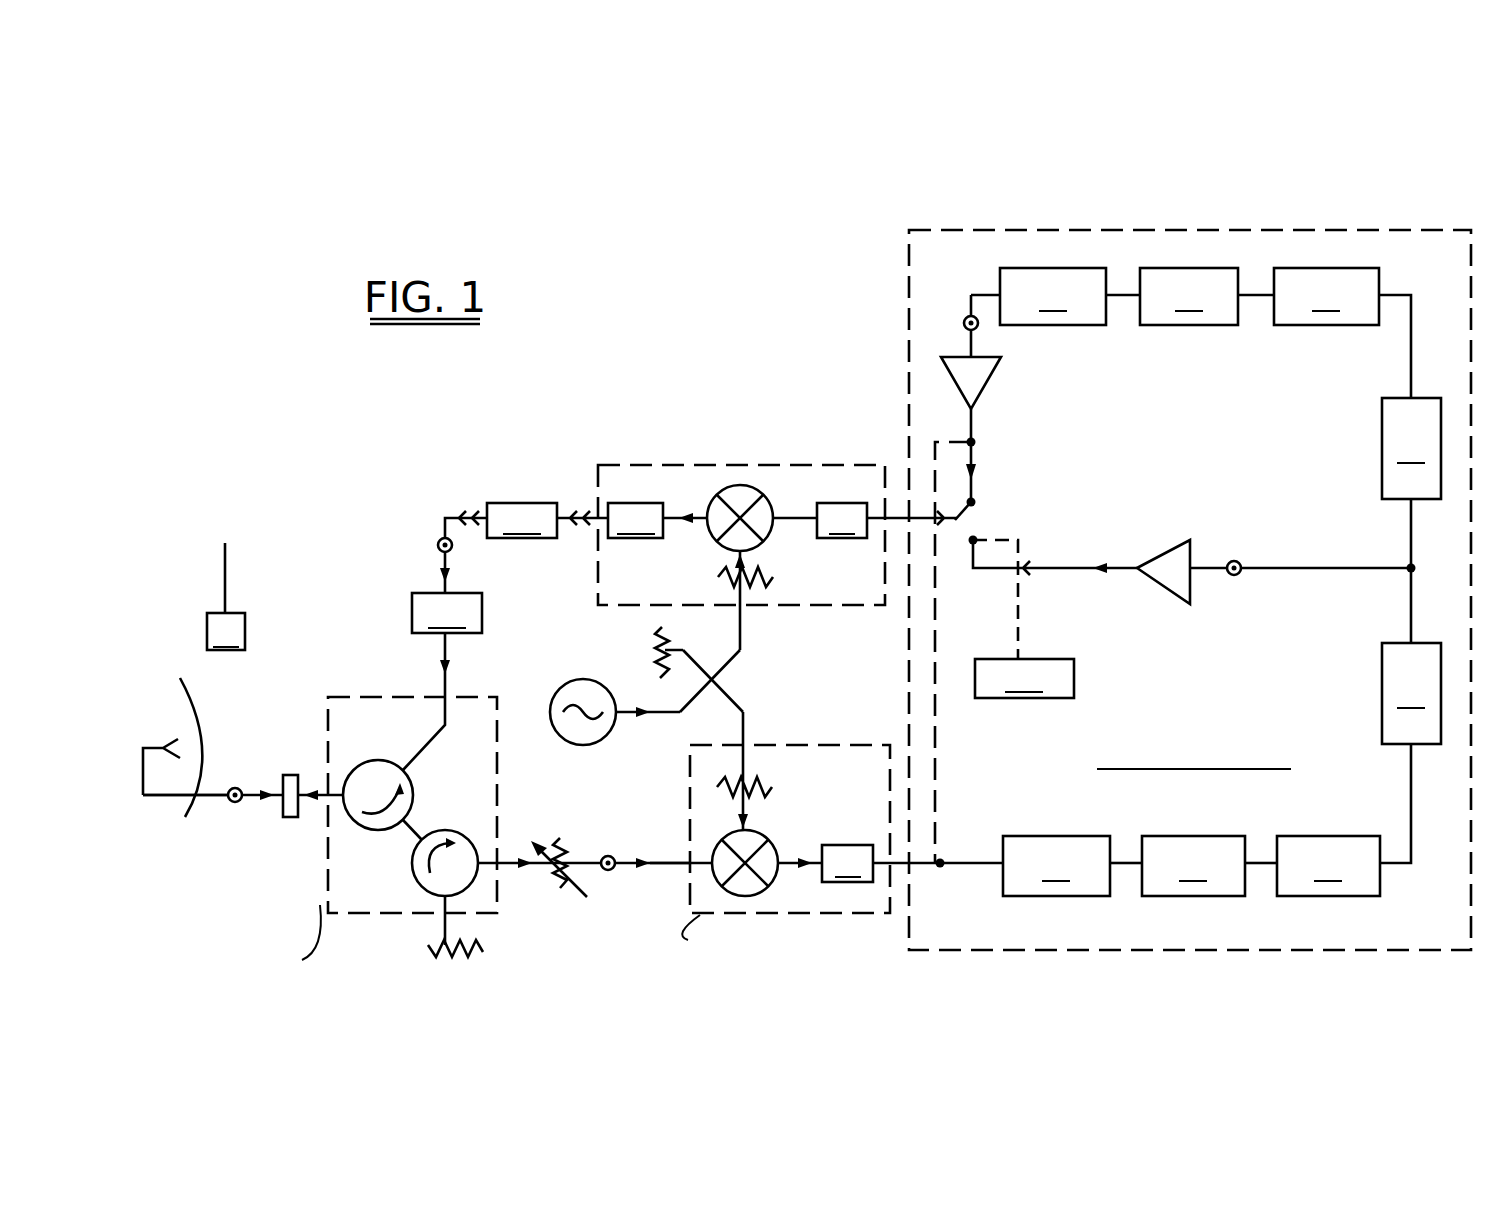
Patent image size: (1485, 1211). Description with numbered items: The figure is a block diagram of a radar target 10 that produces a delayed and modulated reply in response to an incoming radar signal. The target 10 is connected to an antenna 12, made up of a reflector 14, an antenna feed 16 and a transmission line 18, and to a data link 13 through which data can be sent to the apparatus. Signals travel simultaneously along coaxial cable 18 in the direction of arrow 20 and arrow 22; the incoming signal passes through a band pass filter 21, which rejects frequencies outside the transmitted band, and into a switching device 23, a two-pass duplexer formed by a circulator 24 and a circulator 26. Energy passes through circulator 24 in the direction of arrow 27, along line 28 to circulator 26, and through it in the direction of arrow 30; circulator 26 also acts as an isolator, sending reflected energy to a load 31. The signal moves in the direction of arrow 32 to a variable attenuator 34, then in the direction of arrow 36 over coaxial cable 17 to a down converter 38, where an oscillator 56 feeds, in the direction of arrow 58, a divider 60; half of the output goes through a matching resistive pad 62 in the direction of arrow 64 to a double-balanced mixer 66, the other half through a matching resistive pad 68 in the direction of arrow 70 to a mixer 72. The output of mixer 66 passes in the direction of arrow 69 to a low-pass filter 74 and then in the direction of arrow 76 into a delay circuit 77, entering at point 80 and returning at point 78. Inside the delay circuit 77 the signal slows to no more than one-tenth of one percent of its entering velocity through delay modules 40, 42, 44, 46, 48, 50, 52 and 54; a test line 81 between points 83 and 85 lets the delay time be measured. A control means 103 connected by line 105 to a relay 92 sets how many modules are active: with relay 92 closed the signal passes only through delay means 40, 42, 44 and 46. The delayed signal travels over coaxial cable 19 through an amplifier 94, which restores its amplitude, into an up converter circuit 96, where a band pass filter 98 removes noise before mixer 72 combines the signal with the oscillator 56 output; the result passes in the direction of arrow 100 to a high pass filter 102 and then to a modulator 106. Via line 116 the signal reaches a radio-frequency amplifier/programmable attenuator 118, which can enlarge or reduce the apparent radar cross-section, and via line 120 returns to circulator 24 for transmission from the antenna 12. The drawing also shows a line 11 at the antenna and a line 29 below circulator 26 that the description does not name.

The radar target 10 is at (772, 352).
The antenna feed line 11 is at (205, 797).
The antenna 12 is at (188, 746).
The data link 13 is at (226, 596).
The reflector 14 is at (203, 755).
The antenna feed 16 is at (165, 742).
The coaxial cable 17 is at (665, 860).
The transmission line 18 is at (170, 800).
The coaxial cable 19 is at (978, 330).
The arrow 20 is at (268, 790).
The band pass filter 21 is at (290, 775).
The arrow 22 is at (310, 800).
The switching device 23 is at (345, 695).
The circulator 24 is at (378, 776).
The circulator 26 is at (419, 863).
The arrow 27 is at (368, 762).
The line 28 is at (418, 832).
The line 29 is at (440, 942).
The arrow 30 is at (413, 873).
The load 31 is at (470, 955).
The arrow 32 is at (525, 858).
The variable attenuator 34 is at (560, 838).
The arrow 36 is at (640, 868).
The down converter 38 is at (853, 745).
The delay module 40 is at (1072, 866).
The delay module 42 is at (1209, 866).
The delay module 44 is at (1344, 820).
The delay module 46 is at (1411, 621).
The delay module 48 is at (1410, 397).
The delay module 50 is at (1308, 296).
The delay module 52 is at (1172, 296).
The delay module 54 is at (1038, 312).
The oscillator 56 is at (560, 690).
The arrow 58 is at (648, 714).
The divider 60 is at (713, 670).
The matching resistive pad 62 is at (775, 785).
The arrow 64 is at (764, 853).
The mixer 66 is at (768, 888).
The matching resistive pad 68 is at (715, 583).
The arrow 69 is at (810, 853).
The arrow 70 is at (748, 568).
The mixer 72 is at (760, 496).
The filter 74 is at (847, 863).
The arrow 76 is at (925, 870).
The delay circuit 77 is at (1125, 956).
The point 78 is at (980, 502).
The point 80 is at (965, 860).
The test line 81 is at (940, 745).
The point 83 is at (945, 868).
The point 85 is at (978, 442).
The relay 92 is at (975, 512).
The amplifier 94 is at (985, 385).
The up converter circuit 96 is at (758, 462).
The band pass filter 98 is at (865, 520).
The arrow 100 is at (692, 510).
The high pass filter 102 is at (635, 520).
The control means 103 is at (1024, 678).
The line 105 is at (1022, 622).
The modulator 106 is at (547, 520).
The line 116 is at (443, 518).
The radio-frequency amplifier/programmable attenuator 118 is at (447, 613).
The line 120 is at (443, 650).